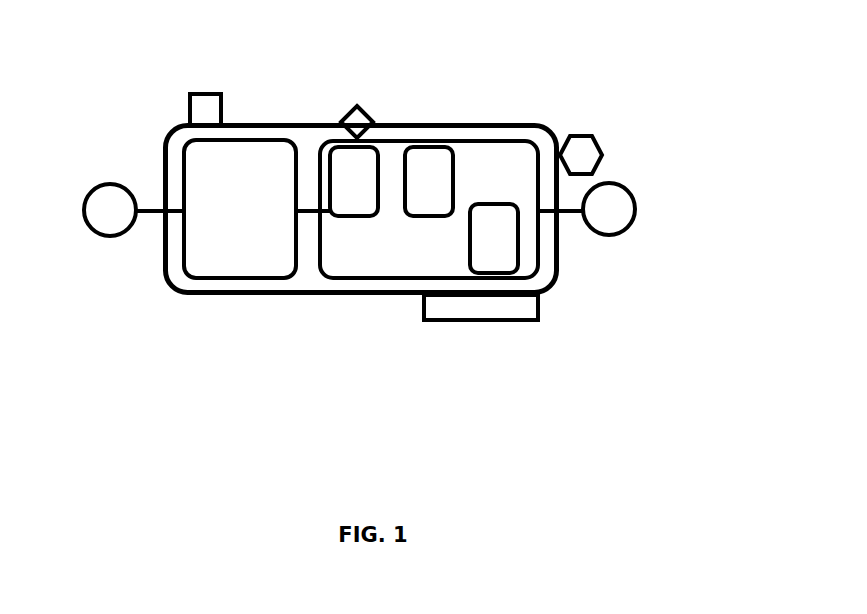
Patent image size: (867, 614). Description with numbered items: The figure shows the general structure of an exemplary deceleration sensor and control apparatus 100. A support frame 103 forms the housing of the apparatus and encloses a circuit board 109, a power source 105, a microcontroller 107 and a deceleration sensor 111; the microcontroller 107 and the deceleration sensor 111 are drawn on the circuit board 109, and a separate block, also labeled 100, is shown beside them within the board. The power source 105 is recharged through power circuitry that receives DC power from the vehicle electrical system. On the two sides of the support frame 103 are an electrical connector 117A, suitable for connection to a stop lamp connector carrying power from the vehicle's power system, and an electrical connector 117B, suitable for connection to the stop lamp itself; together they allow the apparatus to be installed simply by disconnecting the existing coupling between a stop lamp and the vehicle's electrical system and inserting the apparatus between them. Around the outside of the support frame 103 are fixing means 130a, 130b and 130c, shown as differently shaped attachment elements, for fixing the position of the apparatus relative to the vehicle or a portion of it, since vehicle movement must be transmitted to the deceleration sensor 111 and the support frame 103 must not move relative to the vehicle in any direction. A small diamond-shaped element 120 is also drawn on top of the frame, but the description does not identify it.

The sensor and control apparatus 100 is at (310, 92).
The support frame 103 is at (175, 292).
The power source 105 is at (238, 279).
The microcontroller 107 is at (436, 144).
The circuit board 109 is at (405, 282).
The deceleration sensor 111 is at (513, 199).
The electrical connector 117A is at (99, 237).
The electrical connector 117B is at (626, 235).
The sensor 120 is at (363, 107).
The means for fixing the position of the apparatus 130a is at (604, 137).
The means for fixing the position of the apparatus 130b is at (525, 324).
The means for fixing the position of the apparatus 130c is at (196, 92).